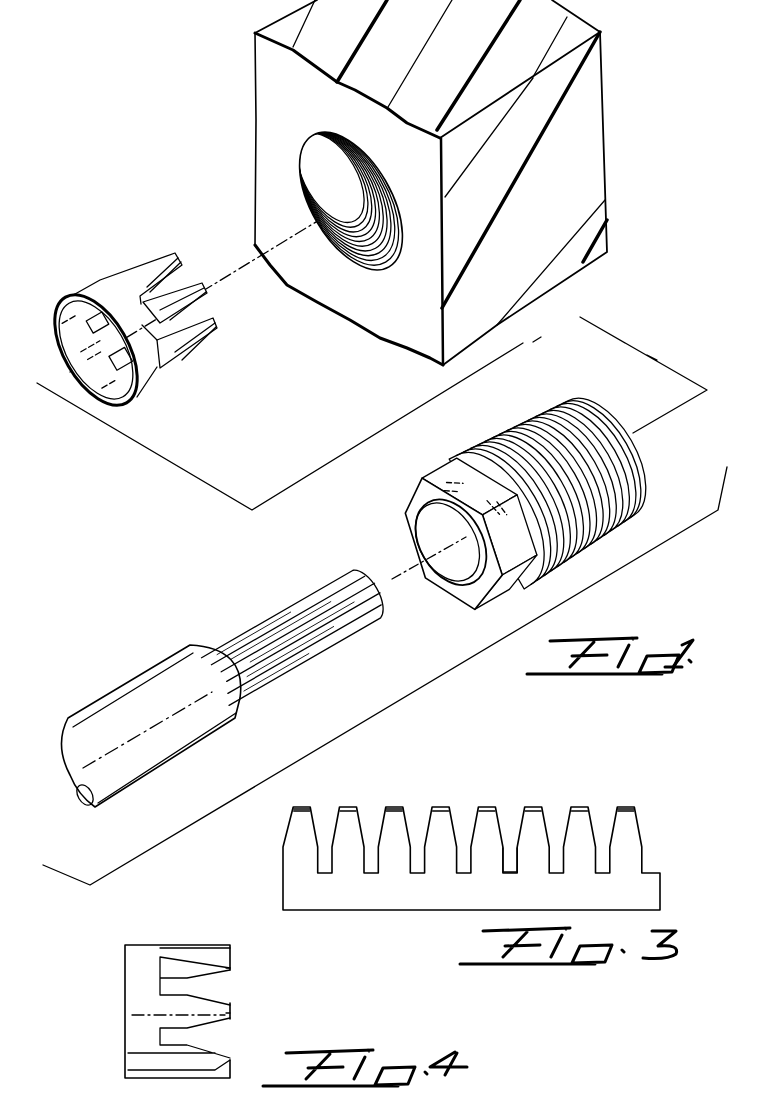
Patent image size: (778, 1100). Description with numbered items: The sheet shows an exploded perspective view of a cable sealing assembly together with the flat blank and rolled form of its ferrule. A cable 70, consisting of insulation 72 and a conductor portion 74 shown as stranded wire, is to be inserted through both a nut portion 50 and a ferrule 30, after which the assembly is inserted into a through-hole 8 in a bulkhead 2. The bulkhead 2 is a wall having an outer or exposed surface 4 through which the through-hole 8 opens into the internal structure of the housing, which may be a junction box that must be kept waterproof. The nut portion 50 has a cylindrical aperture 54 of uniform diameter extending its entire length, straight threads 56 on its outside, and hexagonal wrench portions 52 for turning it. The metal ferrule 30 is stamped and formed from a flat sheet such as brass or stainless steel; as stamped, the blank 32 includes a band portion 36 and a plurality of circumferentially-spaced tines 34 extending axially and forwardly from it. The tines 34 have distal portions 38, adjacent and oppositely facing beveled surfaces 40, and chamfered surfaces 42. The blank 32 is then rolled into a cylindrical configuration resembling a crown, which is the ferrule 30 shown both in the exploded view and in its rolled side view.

In FIG. 1, the bulkhead 2 is at (620, 66).
In FIG. 1, the outer surface 4 is at (263, 87).
In FIG. 1, the through-hole 8 is at (357, 227).
In FIG. 1, the ferrule 30 is at (87, 266).
In FIG. 4, the ferrule 30 is at (108, 975).
In FIG. 1, the nut portion 50 is at (651, 472).
In FIG. 1, the hexagonal wrench portions 52 is at (443, 478).
In FIG. 1, the cylindrical aperture 54 is at (438, 522).
In FIG. 1, the straight threads 56 is at (531, 413).
In FIG. 1, the cable 70 is at (75, 688).
In FIG. 1, the insulation 72 is at (165, 668).
In FIG. 1, the conductor portion 74 is at (303, 613).
In FIG. 3, the blank 32 is at (560, 773).
In FIG. 3, the tines 34 is at (433, 830).
In FIG. 3, the band portion 36 is at (397, 897).
In FIG. 3, the distal portions 38 is at (623, 803).
In FIG. 3, the beveled surfaces 40 is at (503, 826).
In FIG. 3, the chamfered surfaces 42 is at (303, 806).
In FIG. 4, the chamfered surfaces 42 is at (230, 1013).